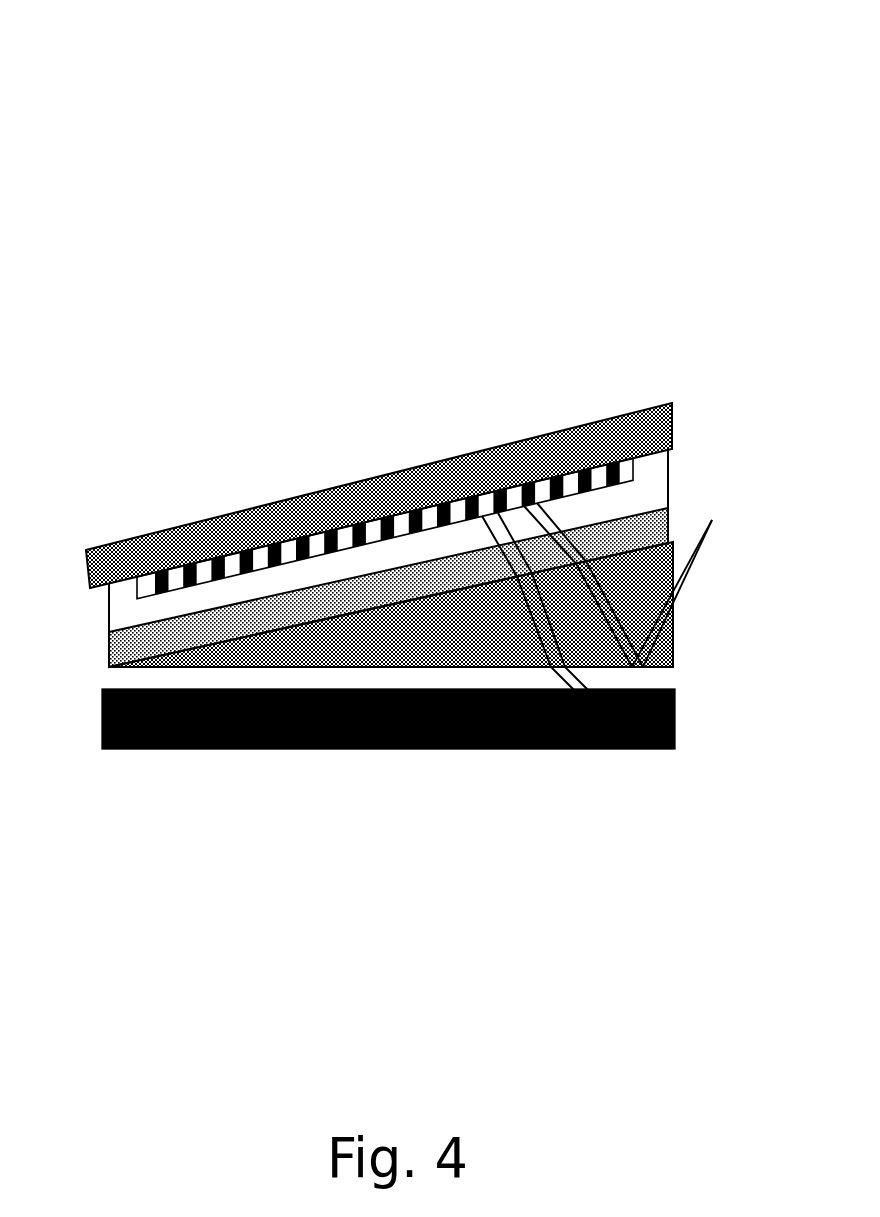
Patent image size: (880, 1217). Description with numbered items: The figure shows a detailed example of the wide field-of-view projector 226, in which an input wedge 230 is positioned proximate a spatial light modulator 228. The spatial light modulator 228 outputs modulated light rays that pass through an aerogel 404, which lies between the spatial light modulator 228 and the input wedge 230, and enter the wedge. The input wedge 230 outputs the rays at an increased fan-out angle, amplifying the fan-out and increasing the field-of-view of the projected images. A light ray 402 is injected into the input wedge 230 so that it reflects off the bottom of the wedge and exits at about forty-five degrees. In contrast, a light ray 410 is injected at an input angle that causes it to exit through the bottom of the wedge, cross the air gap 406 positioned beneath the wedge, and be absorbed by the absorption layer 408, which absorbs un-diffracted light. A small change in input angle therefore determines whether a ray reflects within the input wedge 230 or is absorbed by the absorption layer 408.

The wide field-of-view projector 226 is at (110, 47).
The spatial light modulator 228 is at (673, 507).
The light ray 402 is at (712, 520).
The input wedge 230 is at (674, 629).
The aerogel 404 is at (108, 650).
The air gap 406 is at (673, 681).
The absorption layer 408 is at (143, 750).
The light ray 410 is at (538, 635).